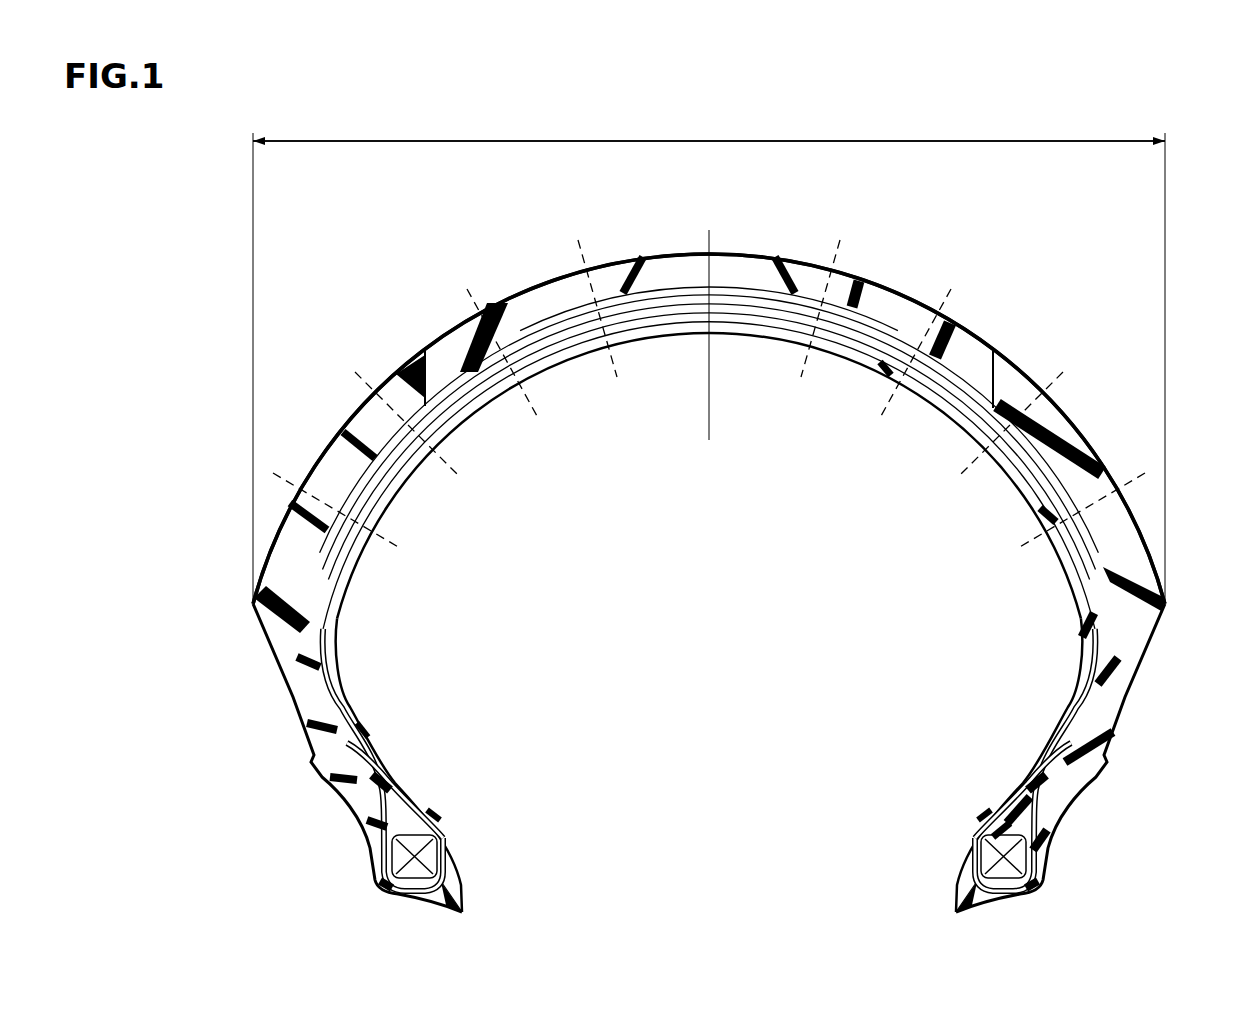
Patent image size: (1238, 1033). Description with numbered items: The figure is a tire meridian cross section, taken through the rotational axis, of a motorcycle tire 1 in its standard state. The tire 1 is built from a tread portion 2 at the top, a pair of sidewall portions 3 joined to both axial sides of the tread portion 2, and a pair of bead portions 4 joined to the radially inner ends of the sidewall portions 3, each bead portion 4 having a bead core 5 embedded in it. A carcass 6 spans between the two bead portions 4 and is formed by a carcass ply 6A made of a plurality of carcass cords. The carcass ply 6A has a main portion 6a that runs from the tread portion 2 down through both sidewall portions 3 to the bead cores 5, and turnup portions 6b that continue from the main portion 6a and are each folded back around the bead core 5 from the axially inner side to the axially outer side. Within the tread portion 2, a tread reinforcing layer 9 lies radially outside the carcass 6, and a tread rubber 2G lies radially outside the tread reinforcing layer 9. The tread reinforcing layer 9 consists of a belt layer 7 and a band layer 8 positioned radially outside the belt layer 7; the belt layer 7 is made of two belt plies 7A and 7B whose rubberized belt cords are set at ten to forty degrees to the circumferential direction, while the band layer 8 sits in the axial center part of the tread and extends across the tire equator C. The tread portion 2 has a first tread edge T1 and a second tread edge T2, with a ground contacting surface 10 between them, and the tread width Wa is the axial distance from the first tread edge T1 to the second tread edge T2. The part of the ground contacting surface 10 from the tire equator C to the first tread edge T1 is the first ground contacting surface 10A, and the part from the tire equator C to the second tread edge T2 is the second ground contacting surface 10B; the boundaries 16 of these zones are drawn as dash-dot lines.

The motorcycle tire 1 is at (987, 300).
The tread portion 2 is at (455, 323).
The tread rubber 2G is at (383, 493).
The sidewall portion 3 is at (293, 715).
The bead portion 4 is at (353, 807).
The bead core 5 is at (427, 857).
The carcass 6 is at (733, 322).
The carcass ply 6A is at (709, 760).
The main portion 6a is at (1043, 777).
The turnup portion 6b is at (1056, 770).
The belt layer 7 is at (709, 420).
The belt ply 7A is at (500, 340).
The belt ply 7B is at (592, 318).
The band layer 8 is at (661, 330).
The tread reinforcing layer 9 is at (709, 433).
The ground contacting surface 10 is at (668, 254).
The first ground contacting surface 10A is at (353, 415).
The second ground contacting surface 10B is at (1018, 373).
The boundary 16 is at (699, 292).
The tire equator C is at (706, 320).
The first tread edge T1 is at (253, 604).
The second tread edge T2 is at (1165, 604).
The tread width Wa is at (709, 126).